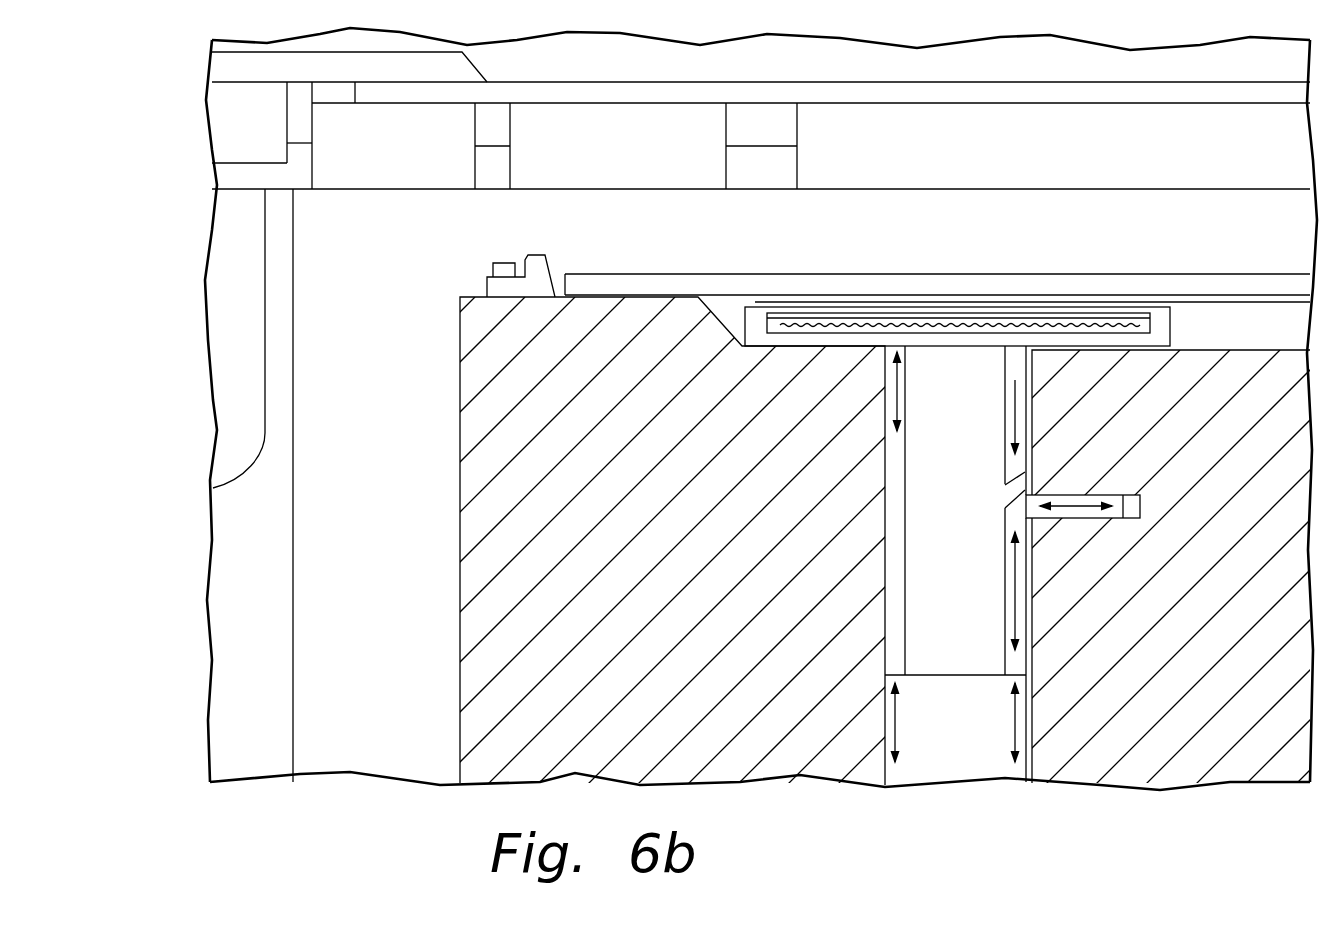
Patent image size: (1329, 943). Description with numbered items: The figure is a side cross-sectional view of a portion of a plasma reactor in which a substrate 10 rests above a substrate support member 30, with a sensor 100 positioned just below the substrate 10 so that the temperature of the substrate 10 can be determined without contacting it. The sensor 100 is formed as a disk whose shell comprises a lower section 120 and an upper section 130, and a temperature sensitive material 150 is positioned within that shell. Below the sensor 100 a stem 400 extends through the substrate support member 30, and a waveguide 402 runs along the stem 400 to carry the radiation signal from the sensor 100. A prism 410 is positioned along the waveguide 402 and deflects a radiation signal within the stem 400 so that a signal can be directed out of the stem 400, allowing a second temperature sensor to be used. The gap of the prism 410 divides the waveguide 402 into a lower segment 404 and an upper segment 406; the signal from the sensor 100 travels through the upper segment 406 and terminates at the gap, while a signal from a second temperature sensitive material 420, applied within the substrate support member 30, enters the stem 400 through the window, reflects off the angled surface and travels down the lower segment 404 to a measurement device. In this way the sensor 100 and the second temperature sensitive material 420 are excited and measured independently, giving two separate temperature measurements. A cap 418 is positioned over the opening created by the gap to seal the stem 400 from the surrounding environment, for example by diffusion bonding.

The substrate 10 is at (616, 280).
The substrate support member 30 is at (472, 377).
The sensor 100 is at (733, 314).
The lower section 120 is at (755, 316).
The upper section 130 is at (846, 313).
The temperature sensitive material 150 is at (1013, 321).
The stem 400 is at (947, 686).
The waveguide 402 is at (1022, 428).
The lower segment 404 is at (1022, 587).
The upper segment 406 is at (1021, 378).
The prism 410 is at (988, 508).
The cap 418 is at (1023, 473).
The second temperature sensitive material 420 is at (1143, 505).